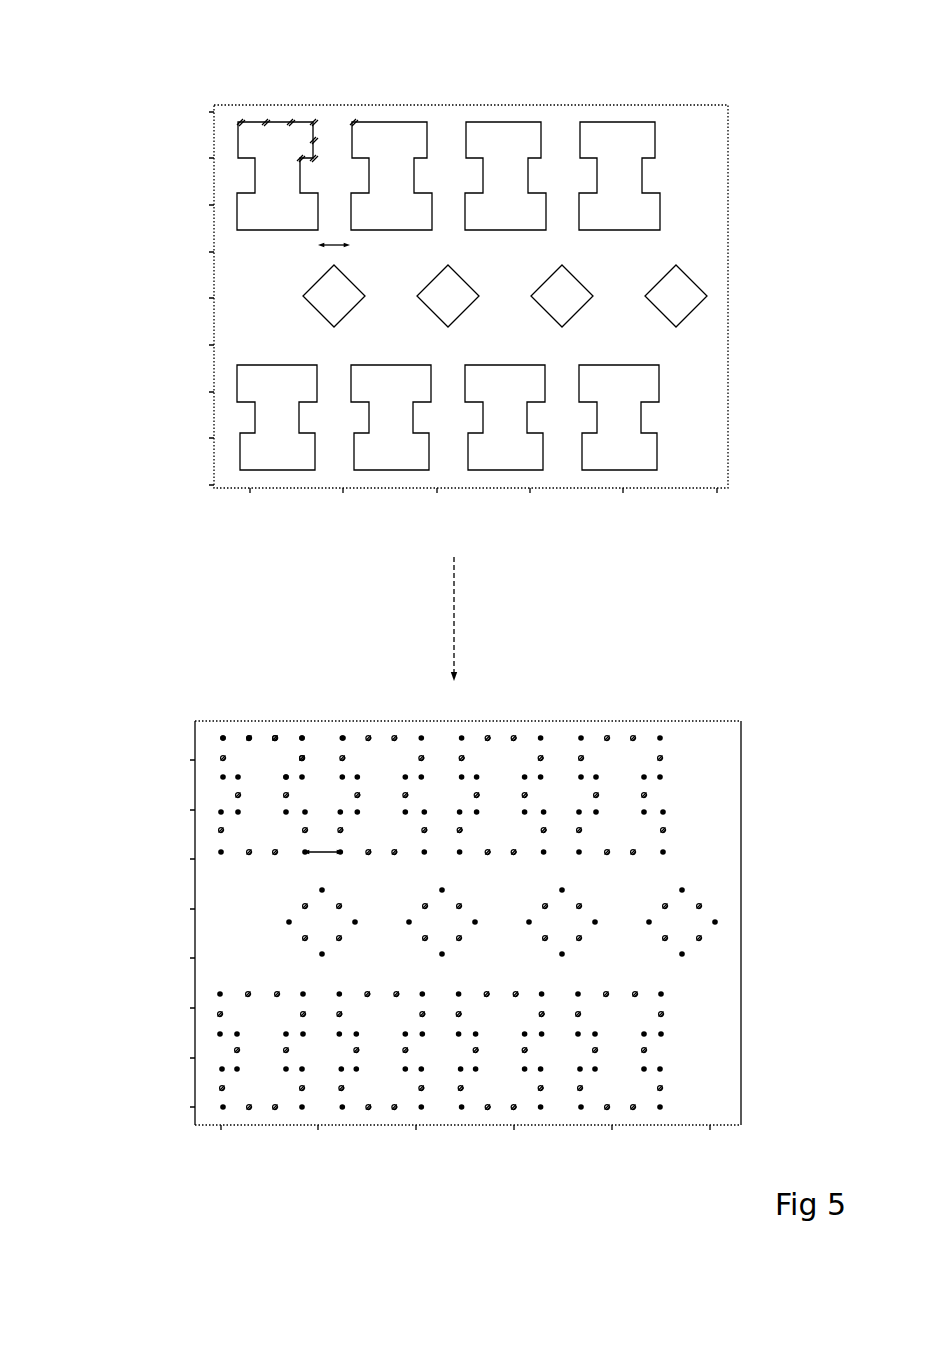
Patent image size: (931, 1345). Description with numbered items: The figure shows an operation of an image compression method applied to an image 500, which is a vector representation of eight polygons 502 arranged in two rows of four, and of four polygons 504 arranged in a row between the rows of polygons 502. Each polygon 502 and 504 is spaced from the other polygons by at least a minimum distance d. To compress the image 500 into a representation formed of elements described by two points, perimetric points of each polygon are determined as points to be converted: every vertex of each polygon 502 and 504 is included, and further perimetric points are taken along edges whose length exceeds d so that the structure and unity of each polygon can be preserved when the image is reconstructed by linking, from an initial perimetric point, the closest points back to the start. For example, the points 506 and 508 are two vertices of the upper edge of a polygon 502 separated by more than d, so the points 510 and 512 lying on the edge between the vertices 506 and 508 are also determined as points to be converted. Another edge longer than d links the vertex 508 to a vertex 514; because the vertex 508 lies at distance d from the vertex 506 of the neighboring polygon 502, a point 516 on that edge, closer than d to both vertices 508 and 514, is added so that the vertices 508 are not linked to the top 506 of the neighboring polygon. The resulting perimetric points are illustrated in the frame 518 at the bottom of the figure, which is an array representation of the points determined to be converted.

The image 500 is at (736, 318).
The polygons 502 is at (610, 108).
The polygons 504 is at (420, 318).
The vertex 506 is at (238, 122).
The vertex 508 is at (313, 122).
The point 510 is at (265, 124).
The point 512 is at (290, 124).
The vertex 514 is at (302, 158).
The point 516 is at (315, 140).
The frame 518 is at (750, 883).